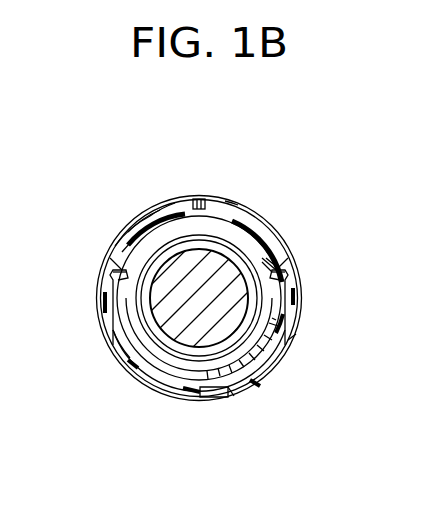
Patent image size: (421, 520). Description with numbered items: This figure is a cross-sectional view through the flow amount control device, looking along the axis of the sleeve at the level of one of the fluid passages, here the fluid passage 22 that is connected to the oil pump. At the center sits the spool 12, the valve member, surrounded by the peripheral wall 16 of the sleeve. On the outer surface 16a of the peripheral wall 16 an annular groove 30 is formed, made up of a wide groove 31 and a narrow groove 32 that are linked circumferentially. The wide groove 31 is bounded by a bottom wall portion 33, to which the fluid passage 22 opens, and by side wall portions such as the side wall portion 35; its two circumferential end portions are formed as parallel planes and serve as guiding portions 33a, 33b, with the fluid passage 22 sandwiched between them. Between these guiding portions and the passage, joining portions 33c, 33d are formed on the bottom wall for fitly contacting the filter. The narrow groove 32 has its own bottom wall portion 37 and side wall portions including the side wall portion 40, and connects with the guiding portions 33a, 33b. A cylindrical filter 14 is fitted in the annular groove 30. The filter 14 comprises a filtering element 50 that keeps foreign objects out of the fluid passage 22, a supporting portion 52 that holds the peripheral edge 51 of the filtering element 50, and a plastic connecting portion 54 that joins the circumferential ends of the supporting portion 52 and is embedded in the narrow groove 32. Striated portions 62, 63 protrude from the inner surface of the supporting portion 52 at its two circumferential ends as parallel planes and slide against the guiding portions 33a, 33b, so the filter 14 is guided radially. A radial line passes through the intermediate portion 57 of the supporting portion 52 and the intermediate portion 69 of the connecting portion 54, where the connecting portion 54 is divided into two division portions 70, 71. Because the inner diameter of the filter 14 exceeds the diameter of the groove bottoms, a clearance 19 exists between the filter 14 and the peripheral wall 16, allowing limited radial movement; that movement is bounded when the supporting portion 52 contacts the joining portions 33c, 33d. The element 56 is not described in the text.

The spool 12 is at (170, 338).
The filter 14 is at (302, 332).
The peripheral wall 16 is at (264, 203).
The outer surface 16a is at (115, 238).
The clearance 19 is at (262, 366).
The fluid passage 22 is at (258, 236).
The annular groove 30 is at (290, 346).
The wide groove 31 is at (126, 238).
The narrow groove 32 is at (112, 335).
The bottom wall portion 33 is at (294, 262).
The guiding portion 33a is at (102, 297).
The guiding portion 33b is at (296, 292).
The joining portion 33c is at (110, 262).
The joining portion 33d is at (282, 262).
The side wall portion 35 is at (238, 206).
The bottom wall portion 37 is at (228, 380).
The side wall portion 40 is at (200, 398).
The filtering element 50 is at (197, 203).
The peripheral edge 51 is at (122, 250).
The supporting portion 52 is at (282, 272).
The connecting portion 54 is at (125, 358).
The housing lip 56 is at (142, 225).
The intermediate portion 57 is at (203, 203).
The striated portion 62 is at (108, 306).
The striated portion 63 is at (294, 302).
The intermediate portion 69 is at (216, 398).
The division portion 70 is at (170, 388).
The division portion 71 is at (252, 382).